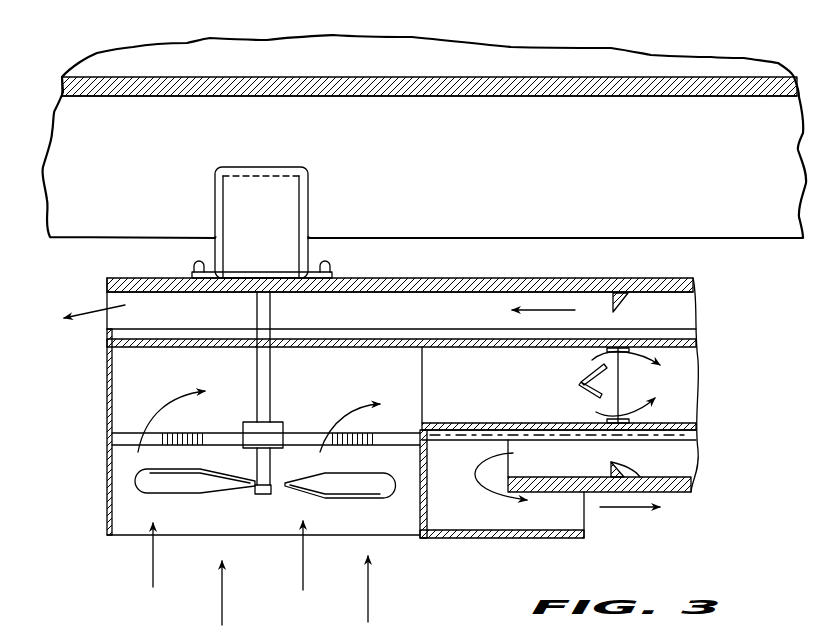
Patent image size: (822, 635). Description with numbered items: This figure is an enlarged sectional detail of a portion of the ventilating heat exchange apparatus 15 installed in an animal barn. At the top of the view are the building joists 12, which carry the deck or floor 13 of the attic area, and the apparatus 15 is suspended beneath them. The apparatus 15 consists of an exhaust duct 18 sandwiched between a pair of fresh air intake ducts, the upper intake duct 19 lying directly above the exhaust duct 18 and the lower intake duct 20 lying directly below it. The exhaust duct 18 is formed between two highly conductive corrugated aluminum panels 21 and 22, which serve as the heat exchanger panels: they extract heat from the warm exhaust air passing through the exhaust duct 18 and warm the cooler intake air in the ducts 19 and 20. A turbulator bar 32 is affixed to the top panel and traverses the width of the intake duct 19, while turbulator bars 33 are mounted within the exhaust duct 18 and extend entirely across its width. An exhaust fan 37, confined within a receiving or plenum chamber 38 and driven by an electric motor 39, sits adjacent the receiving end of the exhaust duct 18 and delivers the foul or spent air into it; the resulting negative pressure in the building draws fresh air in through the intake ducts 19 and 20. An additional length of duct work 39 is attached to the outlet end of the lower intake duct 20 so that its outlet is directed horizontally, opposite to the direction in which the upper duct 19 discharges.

The joists 12 is at (625, 117).
The deck or floor 13 is at (730, 87).
The ventilating heat exchange apparatus 15 is at (104, 292).
The exhaust duct 18 is at (680, 393).
The fresh air intake duct 19 is at (680, 312).
The fresh air intake duct 20 is at (668, 463).
The aluminum panel 21 is at (690, 343).
The aluminum panel 22 is at (680, 431).
The turbulator bar 32 is at (622, 300).
The turbulator bars 33 is at (578, 379).
The exhaust fan 37 is at (183, 500).
The plenum chamber 38 is at (107, 490).
The electric motor 39 is at (517, 539).